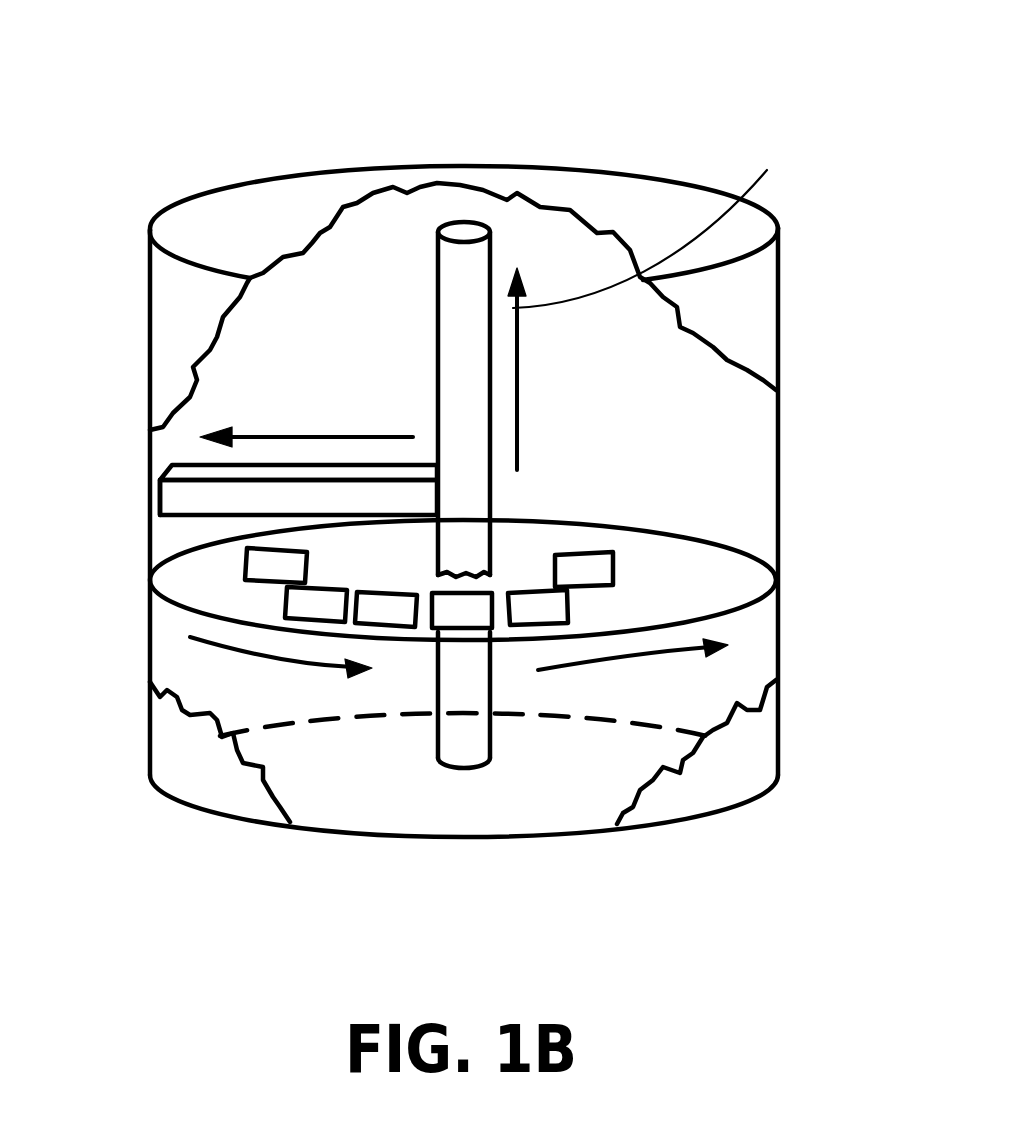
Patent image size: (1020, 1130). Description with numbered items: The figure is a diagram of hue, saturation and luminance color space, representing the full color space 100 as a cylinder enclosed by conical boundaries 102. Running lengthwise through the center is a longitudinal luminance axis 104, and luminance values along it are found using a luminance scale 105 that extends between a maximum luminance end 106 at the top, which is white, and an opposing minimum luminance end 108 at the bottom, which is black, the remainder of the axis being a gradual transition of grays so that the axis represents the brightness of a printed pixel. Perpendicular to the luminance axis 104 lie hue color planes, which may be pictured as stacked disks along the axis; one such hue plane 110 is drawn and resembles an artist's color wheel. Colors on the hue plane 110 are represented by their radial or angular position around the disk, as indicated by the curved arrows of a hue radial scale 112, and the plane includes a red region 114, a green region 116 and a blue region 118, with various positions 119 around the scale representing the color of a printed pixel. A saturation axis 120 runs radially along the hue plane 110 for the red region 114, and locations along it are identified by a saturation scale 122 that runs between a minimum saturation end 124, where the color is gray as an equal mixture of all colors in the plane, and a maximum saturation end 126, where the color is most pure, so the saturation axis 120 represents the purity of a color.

The full color space 100 is at (124, 88).
The conical boundaries 102 is at (607, 187).
The longitudinal luminance axis 104 is at (458, 270).
The luminance scale 105 is at (653, 220).
The maximum luminance end 106 is at (453, 227).
The minimum luminance end 108 is at (452, 772).
The hue plane 110 is at (778, 582).
The hue radial scale 112 is at (277, 622).
The red region 114 is at (136, 578).
The green region 116 is at (640, 518).
The blue region 118 is at (768, 610).
The positions 119 is at (287, 567).
The saturation axis 120 is at (228, 500).
The saturation scale 122 is at (235, 450).
The minimum saturation end 124 is at (440, 483).
The maximum saturation end 126 is at (160, 497).